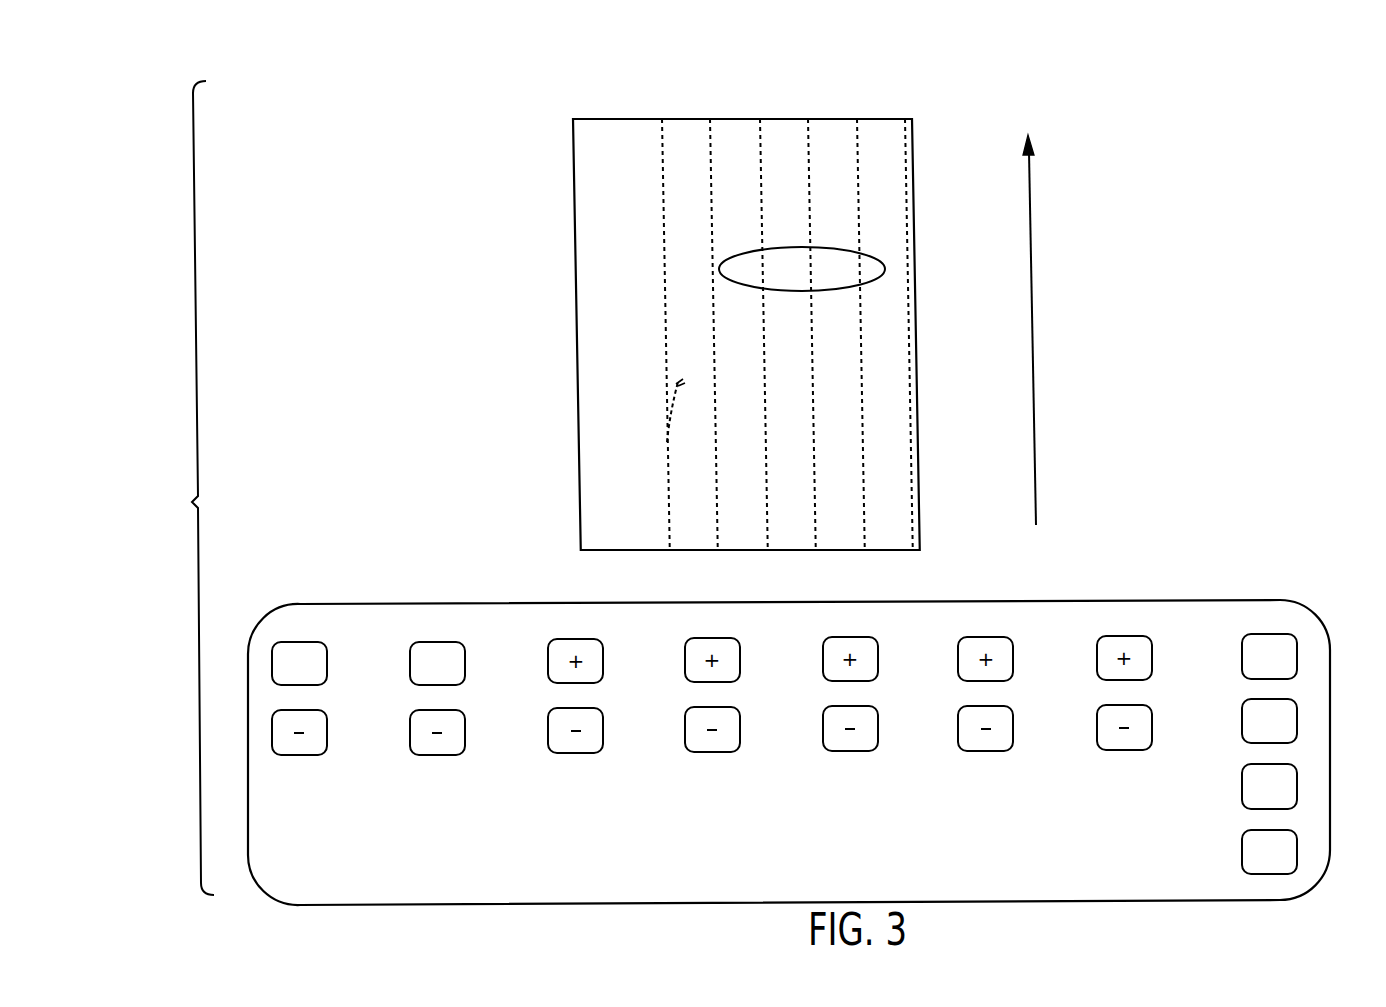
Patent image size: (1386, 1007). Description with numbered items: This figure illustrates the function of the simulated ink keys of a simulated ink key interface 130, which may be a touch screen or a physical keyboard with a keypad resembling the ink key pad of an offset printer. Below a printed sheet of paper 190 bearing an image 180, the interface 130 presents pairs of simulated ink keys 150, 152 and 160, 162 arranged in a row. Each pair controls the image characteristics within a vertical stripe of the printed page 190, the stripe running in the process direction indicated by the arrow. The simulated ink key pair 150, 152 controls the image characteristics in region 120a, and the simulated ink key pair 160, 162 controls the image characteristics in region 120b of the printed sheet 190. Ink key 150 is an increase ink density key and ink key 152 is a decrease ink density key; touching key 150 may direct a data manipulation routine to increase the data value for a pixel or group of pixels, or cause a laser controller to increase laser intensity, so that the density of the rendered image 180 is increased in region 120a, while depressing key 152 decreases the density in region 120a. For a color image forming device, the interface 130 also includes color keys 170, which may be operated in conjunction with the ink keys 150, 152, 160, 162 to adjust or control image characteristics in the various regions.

The region 120a is at (660, 110).
The region 120b is at (710, 110).
The simulated ink key interface 130 is at (248, 755).
The simulated ink key 150 is at (300, 640).
The simulated ink key 152 is at (299, 753).
The simulated ink key 160 is at (437, 640).
The simulated ink key 162 is at (437, 753).
The color keys 170 is at (1242, 716).
The image 180 is at (870, 280).
The sheet of paper 190 is at (950, 317).